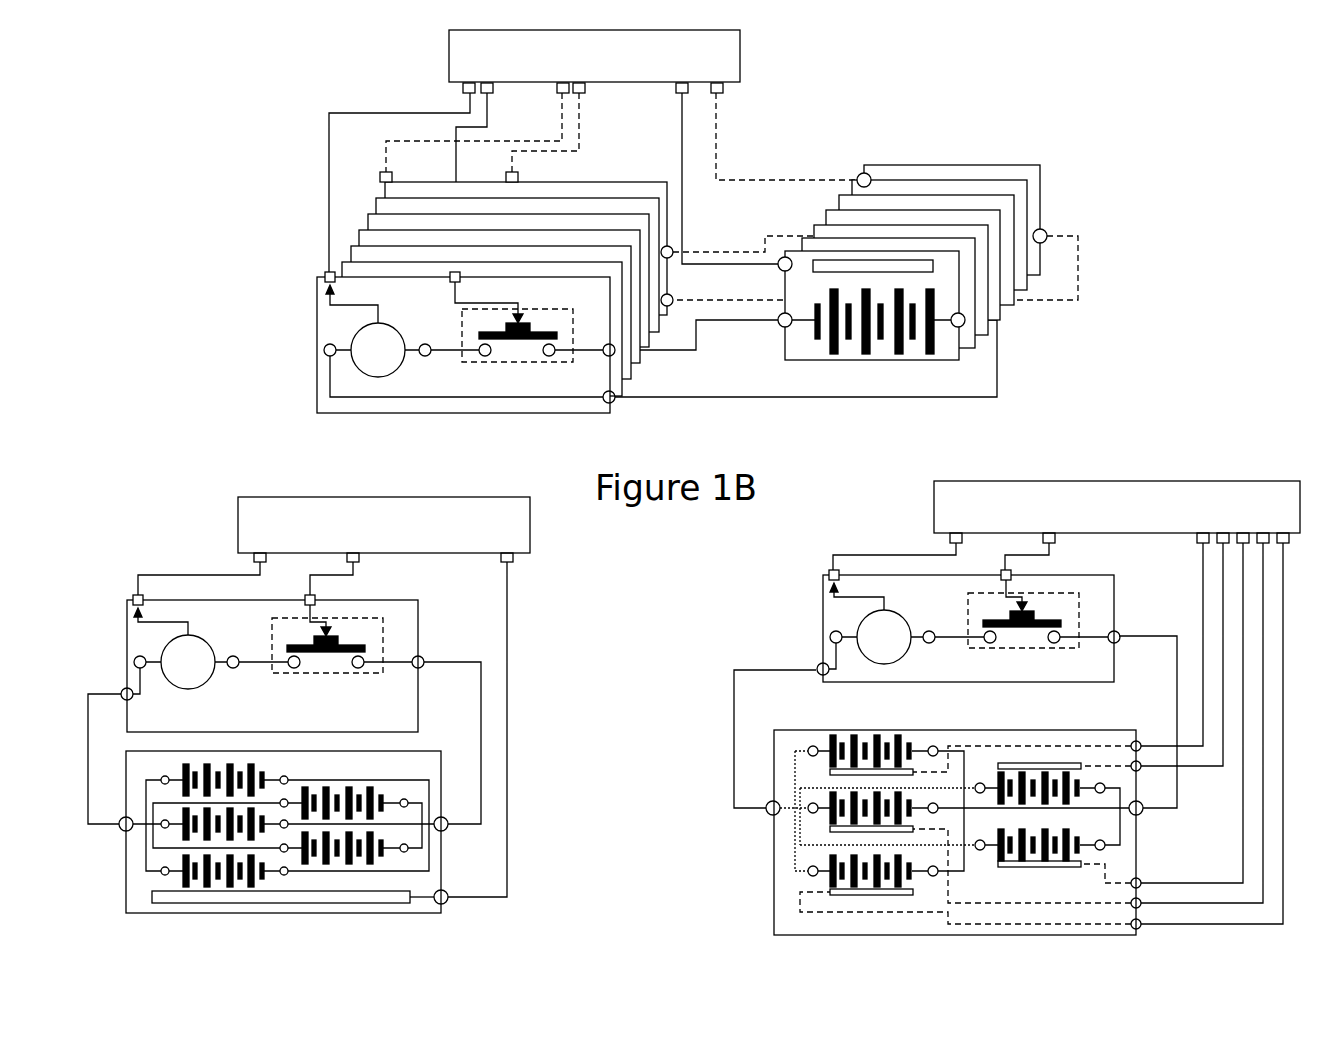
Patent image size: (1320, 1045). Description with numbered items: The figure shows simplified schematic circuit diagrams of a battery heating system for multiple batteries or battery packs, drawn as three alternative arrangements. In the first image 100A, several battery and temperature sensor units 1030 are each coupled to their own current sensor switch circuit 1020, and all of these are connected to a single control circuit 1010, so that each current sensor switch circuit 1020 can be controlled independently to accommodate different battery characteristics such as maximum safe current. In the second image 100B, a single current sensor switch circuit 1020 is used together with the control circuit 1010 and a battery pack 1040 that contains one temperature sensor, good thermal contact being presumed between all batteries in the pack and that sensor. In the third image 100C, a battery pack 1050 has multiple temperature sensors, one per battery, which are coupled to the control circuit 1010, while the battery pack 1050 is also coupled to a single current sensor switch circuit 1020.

The control circuit 1010 is at (769, 296).
The current sensor switch circuit 1020 is at (318, 385).
The battery and temperature sensor 1030 is at (895, 366).
The battery pack 1040 is at (283, 849).
The battery pack 1050 is at (901, 832).
The first image 100A is at (759, 233).
The second image 100B is at (415, 728).
The third image 100C is at (1008, 733).